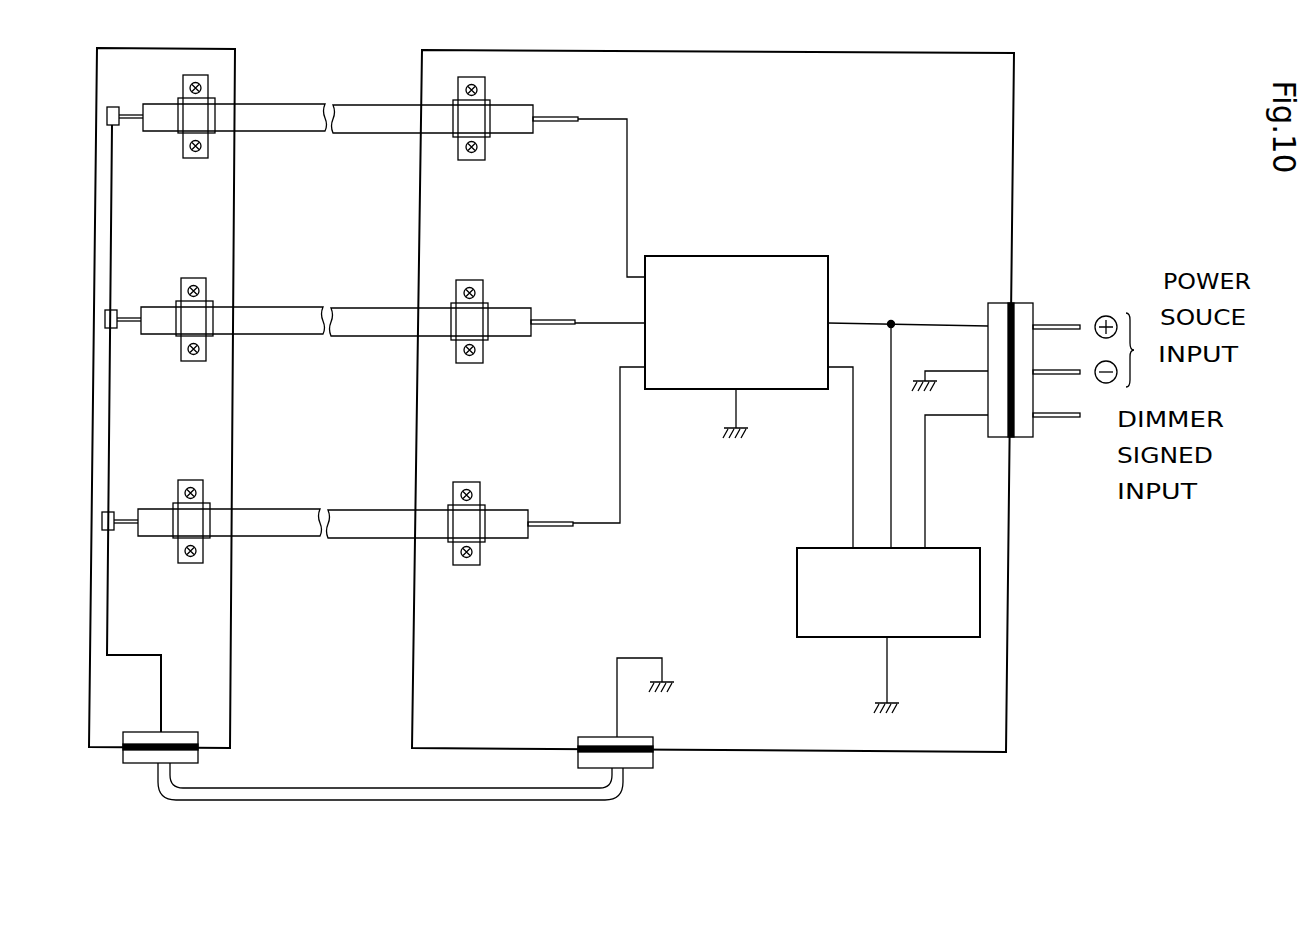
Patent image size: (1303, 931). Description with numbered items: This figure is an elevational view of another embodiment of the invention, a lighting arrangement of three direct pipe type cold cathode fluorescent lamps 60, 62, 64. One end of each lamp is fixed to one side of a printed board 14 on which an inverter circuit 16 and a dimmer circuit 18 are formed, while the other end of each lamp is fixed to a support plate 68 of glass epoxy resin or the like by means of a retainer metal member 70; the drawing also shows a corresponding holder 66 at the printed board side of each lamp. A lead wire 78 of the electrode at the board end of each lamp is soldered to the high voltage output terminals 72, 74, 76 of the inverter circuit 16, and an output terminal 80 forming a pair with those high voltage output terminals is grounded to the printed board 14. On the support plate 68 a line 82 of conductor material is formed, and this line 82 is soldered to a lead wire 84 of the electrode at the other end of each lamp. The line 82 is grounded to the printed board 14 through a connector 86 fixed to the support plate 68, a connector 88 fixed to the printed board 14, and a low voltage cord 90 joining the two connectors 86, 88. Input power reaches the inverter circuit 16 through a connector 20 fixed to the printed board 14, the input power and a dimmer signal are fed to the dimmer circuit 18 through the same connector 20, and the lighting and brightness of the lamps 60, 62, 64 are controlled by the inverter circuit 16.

The printed board 14 is at (1006, 640).
The inverter circuit 16 is at (805, 268).
The dimmer circuit 18 is at (797, 584).
The connector 20 is at (1020, 437).
The cold cathode fluorescent lamp 60 is at (365, 133).
The cold cathode fluorescent lamp 62 is at (342, 340).
The cold cathode fluorescent lamp 64 is at (353, 533).
The lamp holder 66 is at (467, 162).
The support plate 68 is at (240, 68).
The retainer metal member 70 is at (197, 160).
The high voltage output terminal 72 is at (588, 124).
The high voltage output terminal 74 is at (580, 325).
The high voltage output terminal 76 is at (580, 528).
The lead wire 78 is at (560, 118).
The output terminal 80 is at (723, 428).
The line 82 is at (112, 232).
The lead wire 84 is at (131, 120).
The connector 86 is at (133, 765).
The connector 88 is at (642, 768).
The low voltage cord 90 is at (336, 787).